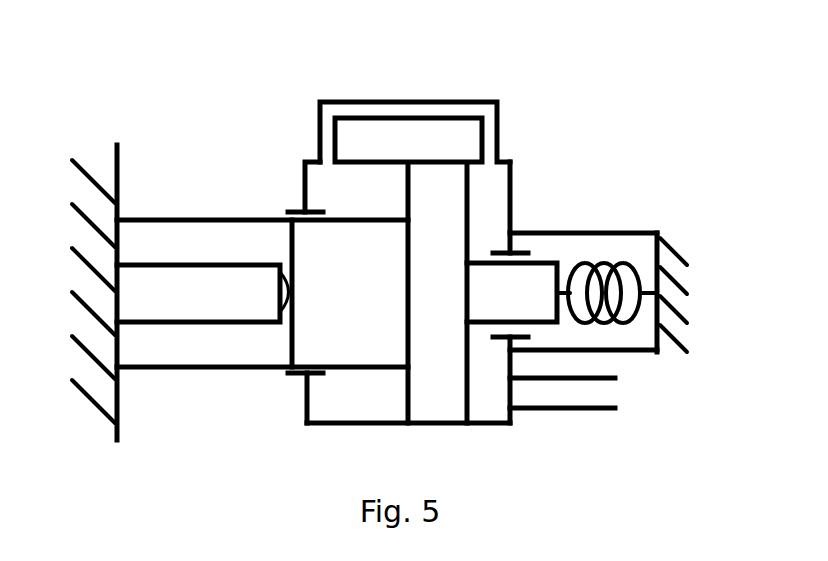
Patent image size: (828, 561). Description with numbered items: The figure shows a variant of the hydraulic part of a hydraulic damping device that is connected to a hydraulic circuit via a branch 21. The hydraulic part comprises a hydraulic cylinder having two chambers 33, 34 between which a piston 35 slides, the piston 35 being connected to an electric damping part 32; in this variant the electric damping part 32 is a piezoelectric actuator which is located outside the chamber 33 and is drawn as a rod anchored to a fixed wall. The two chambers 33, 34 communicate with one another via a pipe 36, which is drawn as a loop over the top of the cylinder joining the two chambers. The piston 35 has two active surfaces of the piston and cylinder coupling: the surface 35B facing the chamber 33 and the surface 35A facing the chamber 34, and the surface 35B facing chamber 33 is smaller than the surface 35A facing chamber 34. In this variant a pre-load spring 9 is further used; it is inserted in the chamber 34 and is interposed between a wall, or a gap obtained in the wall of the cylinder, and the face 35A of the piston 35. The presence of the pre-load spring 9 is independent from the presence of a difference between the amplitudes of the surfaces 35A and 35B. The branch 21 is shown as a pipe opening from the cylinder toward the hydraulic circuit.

The pre-load spring 9 is at (598, 267).
The branch 21 is at (600, 397).
The electric damping part 32 is at (187, 306).
The chamber 33 is at (377, 204).
The chamber 34 is at (483, 200).
The piston 35 is at (444, 306).
The surface 35A is at (468, 395).
The surface 35B is at (405, 400).
The pipe 36 is at (392, 101).